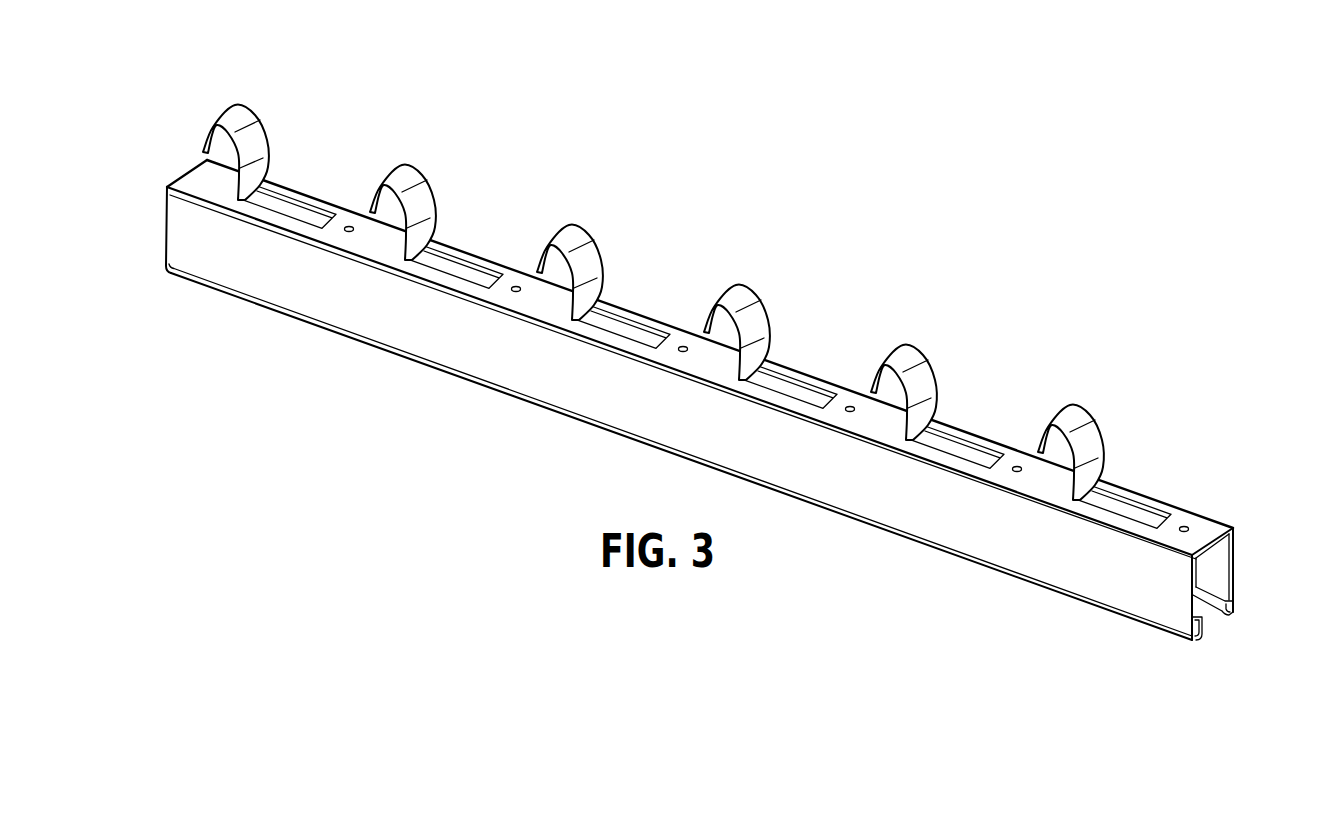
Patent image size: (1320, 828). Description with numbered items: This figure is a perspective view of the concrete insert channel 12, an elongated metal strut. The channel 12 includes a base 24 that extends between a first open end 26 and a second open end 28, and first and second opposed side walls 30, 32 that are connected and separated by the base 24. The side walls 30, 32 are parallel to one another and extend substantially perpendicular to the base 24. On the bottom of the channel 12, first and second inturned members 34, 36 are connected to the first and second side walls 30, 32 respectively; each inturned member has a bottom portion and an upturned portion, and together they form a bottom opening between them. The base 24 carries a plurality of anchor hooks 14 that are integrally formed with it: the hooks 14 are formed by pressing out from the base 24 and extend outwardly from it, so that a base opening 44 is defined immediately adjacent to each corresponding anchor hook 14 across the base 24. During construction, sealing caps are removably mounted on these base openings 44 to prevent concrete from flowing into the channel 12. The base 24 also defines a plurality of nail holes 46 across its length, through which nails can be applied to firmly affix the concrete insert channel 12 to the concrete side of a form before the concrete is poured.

The concrete insert channel 12 is at (771, 229).
The anchor hooks 14 is at (243, 105).
The base 24 is at (521, 278).
The first open end 26 is at (165, 211).
The second open end 28 is at (1208, 572).
The first side wall 30 is at (462, 350).
The second side wall 32 is at (1218, 556).
The first inturned member 34 is at (1194, 646).
The second inturned member 36 is at (1229, 616).
The base openings 44 is at (298, 212).
The nail holes 46 is at (349, 226).